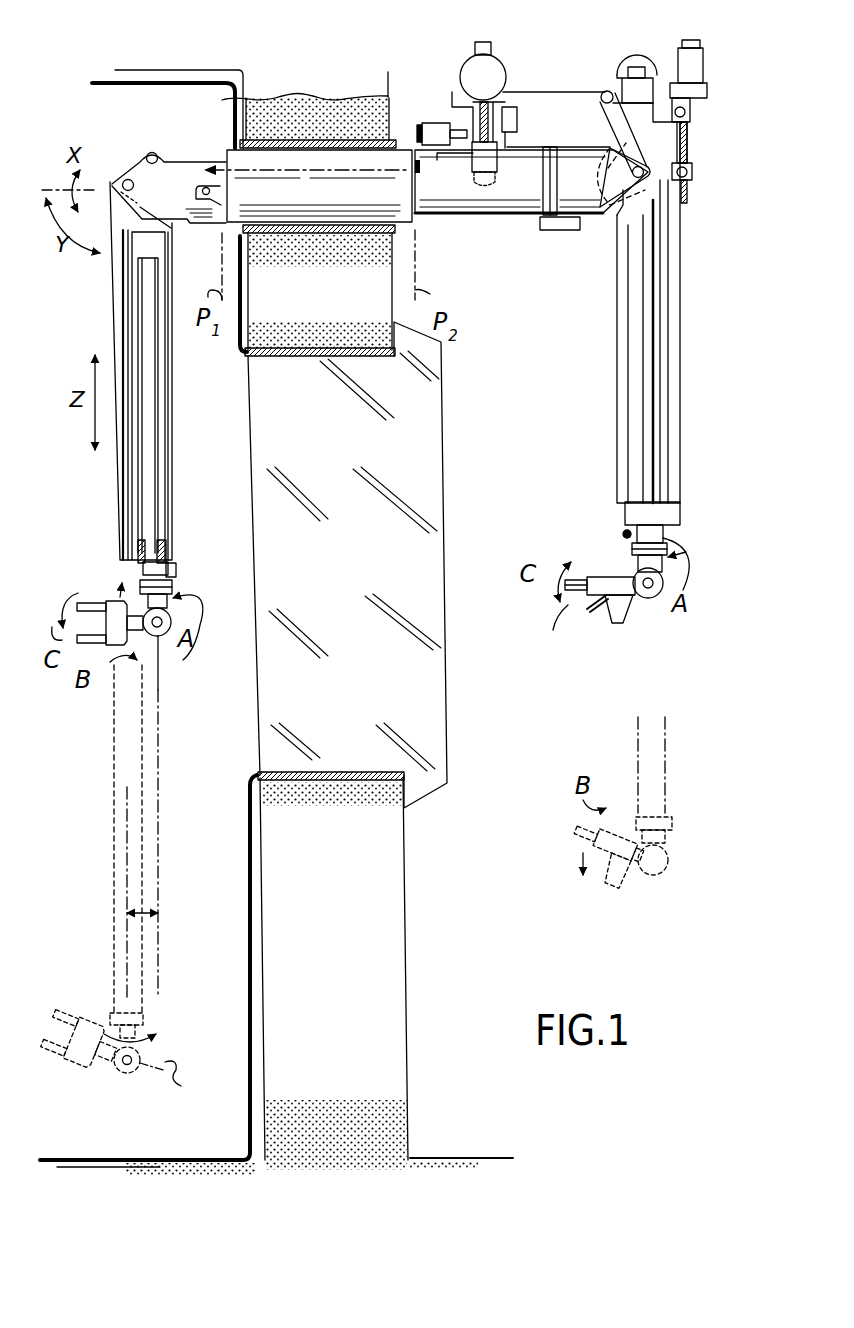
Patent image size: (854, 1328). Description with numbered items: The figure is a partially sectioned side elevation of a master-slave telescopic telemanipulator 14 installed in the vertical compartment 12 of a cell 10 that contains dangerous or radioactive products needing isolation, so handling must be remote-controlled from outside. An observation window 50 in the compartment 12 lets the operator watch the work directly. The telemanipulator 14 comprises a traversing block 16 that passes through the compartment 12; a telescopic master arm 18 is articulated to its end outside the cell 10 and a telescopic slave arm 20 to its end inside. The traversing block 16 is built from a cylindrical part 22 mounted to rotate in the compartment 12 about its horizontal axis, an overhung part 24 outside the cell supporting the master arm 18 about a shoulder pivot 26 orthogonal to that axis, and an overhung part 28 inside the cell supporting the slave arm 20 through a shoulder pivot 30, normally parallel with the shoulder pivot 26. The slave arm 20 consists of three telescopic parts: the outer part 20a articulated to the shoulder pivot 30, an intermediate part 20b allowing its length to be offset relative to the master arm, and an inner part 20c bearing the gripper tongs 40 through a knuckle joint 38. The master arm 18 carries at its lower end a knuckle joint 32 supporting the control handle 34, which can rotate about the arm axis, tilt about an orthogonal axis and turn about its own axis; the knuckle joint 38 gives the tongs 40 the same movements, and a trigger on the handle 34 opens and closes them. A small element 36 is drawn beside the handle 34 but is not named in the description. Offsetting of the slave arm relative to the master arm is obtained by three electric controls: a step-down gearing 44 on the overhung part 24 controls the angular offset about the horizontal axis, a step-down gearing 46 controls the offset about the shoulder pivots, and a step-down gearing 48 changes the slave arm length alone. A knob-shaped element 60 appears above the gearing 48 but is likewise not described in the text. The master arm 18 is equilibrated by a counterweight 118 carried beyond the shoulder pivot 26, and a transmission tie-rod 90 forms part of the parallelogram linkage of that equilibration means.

The cell 10 is at (68, 103).
The vertical compartment 12 is at (333, 971).
The master-slave telescopic telemanipulator 14 is at (548, 36).
The traversing block 16 is at (310, 267).
The telescopic master arm 18 is at (620, 397).
The telescopic slave arm 20 is at (142, 379).
The outer part of the slave arm 20a is at (128, 492).
The intermediate part of the slave arm 20b is at (168, 462).
The inner part of the slave arm 20c is at (158, 522).
The cylindrical part 22 is at (336, 207).
The overhung part 24 is at (513, 217).
The shoulder pivot 26 is at (604, 212).
The overhung part 28 is at (183, 180).
The shoulder pivot 30 is at (124, 179).
The knuckle joint 32 is at (648, 600).
The control handle 34 is at (606, 622).
The nozzle 36 is at (583, 610).
The knuckle joint 38 is at (163, 641).
The gripper tongs 40 is at (93, 657).
The step-down gearing 44 is at (558, 230).
The step-down gearing 46 is at (660, 58).
The step-down gearing 48 is at (505, 114).
The observation window 50 is at (347, 565).
The hand knob 60 is at (462, 73).
The transmission tie-rod 90 is at (537, 97).
The counterweight 118 is at (620, 86).